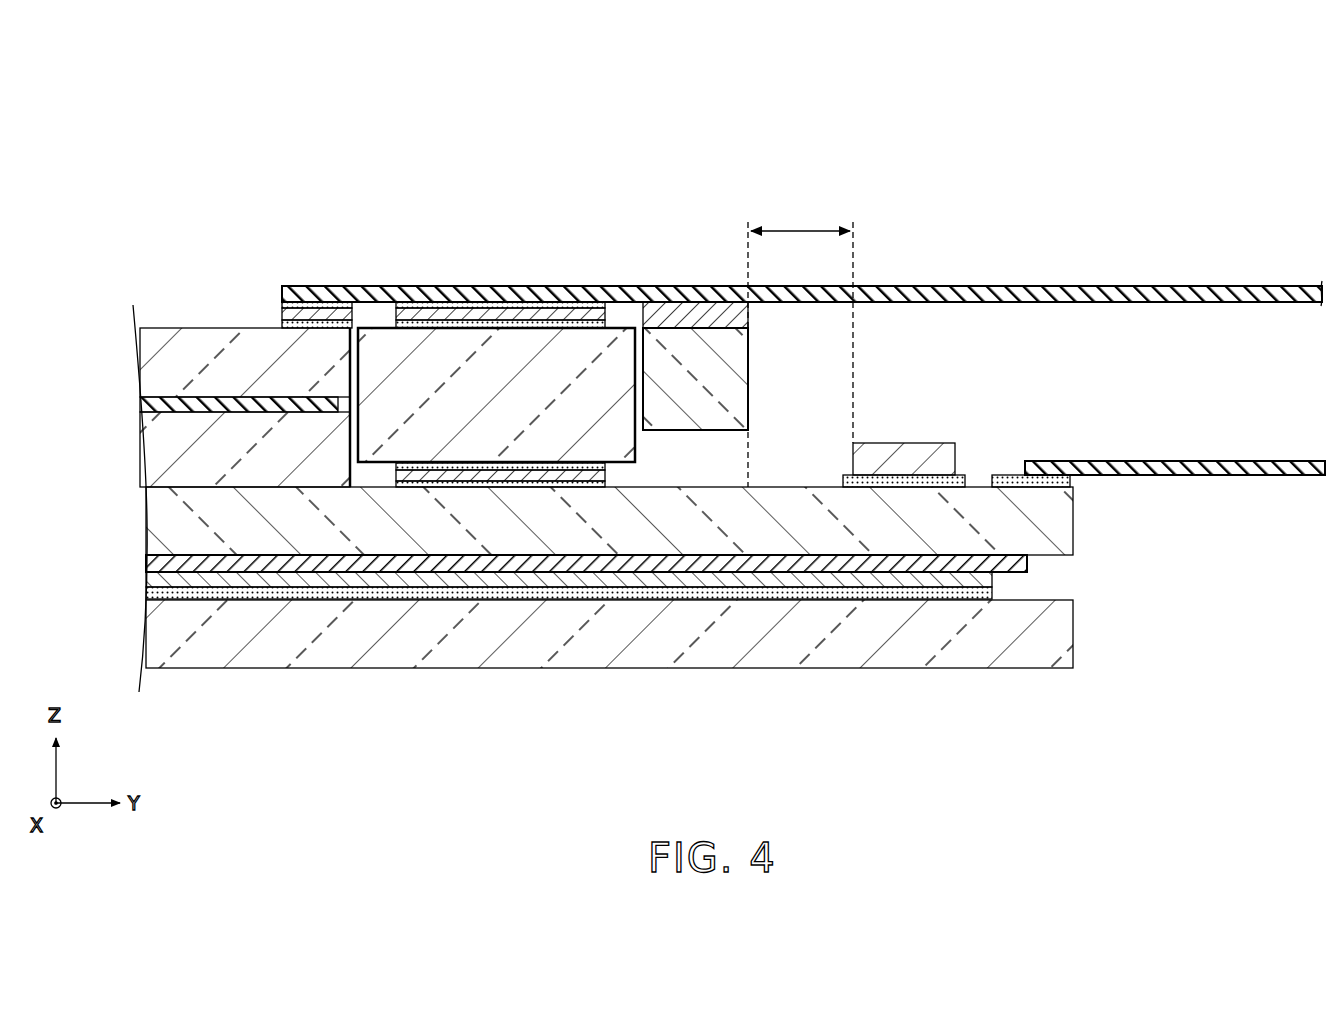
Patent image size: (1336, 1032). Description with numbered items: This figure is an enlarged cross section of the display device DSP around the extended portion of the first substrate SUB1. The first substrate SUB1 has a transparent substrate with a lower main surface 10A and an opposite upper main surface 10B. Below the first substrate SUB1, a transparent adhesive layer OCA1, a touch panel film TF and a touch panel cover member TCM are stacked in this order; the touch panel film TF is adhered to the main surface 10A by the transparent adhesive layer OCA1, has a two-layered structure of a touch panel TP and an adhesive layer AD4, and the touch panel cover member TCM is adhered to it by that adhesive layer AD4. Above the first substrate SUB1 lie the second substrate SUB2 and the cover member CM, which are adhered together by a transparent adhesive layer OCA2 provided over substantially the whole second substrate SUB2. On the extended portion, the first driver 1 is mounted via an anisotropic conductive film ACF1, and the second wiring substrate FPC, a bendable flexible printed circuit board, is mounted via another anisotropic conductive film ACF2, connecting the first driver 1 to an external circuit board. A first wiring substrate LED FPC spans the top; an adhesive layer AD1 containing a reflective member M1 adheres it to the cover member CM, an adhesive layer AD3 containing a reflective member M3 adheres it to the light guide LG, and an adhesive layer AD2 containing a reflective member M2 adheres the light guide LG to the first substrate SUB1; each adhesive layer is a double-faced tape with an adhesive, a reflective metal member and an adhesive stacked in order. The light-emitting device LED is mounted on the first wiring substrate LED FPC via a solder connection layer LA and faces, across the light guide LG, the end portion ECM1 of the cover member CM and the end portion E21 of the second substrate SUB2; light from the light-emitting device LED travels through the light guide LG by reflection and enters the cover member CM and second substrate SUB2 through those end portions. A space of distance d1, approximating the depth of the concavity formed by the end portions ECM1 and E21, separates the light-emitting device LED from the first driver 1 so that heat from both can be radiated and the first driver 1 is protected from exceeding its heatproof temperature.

The display device DSP is at (1022, 122).
The first wiring substrate LED FPC is at (1170, 286).
The adhesive layer AD1 is at (282, 298).
The reflective member M1 is at (282, 314).
The adhesive layer AD3 is at (392, 307).
The reflective member M3 is at (452, 302).
The connection layer LA is at (667, 313).
The light-emitting device LED is at (712, 343).
The light guide LG is at (614, 328).
The cover member CM is at (148, 347).
The transparent adhesive layer OCA2 is at (148, 405).
The second substrate SUB2 is at (148, 455).
The end portion of the cover member ECM1 is at (348, 372).
The end portion of the second substrate E21 is at (348, 455).
The adhesive layer AD2 is at (608, 470).
The reflective member M2 is at (553, 477).
The first driver 1 is at (902, 443).
The anisotropic conductive film ACF1 is at (960, 475).
The anisotropic conductive film ACF2 is at (1010, 475).
The second wiring substrate FPC is at (1192, 477).
The first substrate SUB1 is at (148, 510).
The main surface 10A is at (645, 572).
The main surface 10B is at (694, 486).
The transparent adhesive layer OCA1 is at (148, 563).
The touch panel film TF is at (62, 548).
The touch panel TP is at (148, 580).
The adhesive layer AD4 is at (148, 594).
The touch panel cover member TCM is at (148, 643).
The distance d1 is at (799, 230).